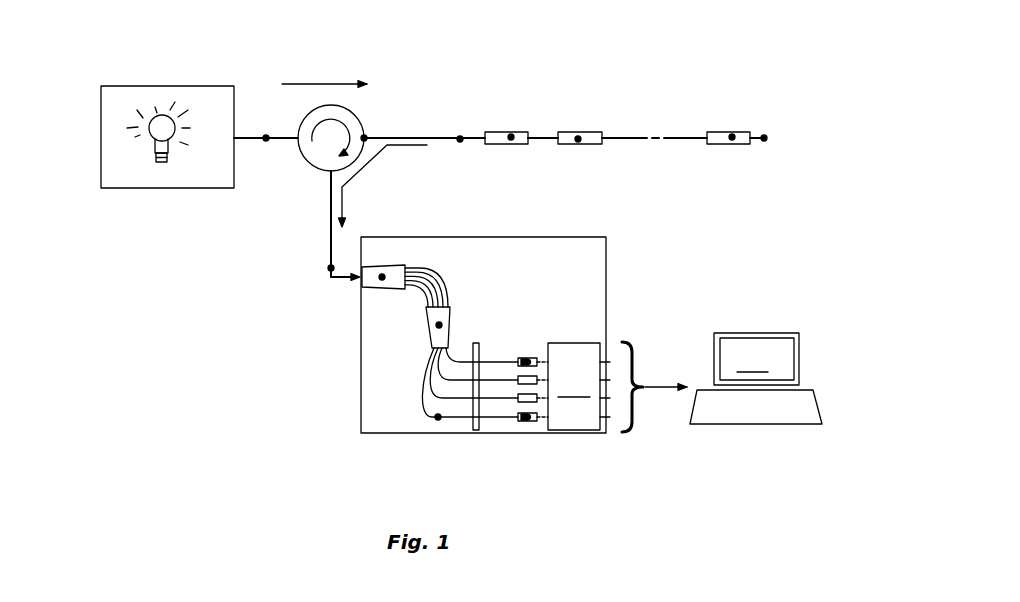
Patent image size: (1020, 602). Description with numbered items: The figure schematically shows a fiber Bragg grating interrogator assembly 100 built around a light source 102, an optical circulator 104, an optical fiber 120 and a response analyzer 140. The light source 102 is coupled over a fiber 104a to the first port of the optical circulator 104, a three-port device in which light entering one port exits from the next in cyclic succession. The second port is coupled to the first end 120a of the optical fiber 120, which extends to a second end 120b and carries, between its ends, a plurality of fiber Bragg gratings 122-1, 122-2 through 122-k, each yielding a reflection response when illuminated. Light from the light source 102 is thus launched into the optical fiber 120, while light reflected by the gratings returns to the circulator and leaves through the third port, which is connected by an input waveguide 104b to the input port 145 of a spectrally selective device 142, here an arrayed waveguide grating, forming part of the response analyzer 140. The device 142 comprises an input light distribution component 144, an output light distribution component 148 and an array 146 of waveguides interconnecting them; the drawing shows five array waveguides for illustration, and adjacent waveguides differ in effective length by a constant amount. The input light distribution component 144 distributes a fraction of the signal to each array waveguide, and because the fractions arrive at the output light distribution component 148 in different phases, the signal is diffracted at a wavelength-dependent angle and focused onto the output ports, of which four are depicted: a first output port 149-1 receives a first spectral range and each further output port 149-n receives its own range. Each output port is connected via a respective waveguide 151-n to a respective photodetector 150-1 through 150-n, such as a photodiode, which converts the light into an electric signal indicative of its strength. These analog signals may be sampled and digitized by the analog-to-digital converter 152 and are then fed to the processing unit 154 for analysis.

The fiber Bragg grating interrogator assembly 100 is at (178, 388).
The light source 102 is at (133, 158).
The optical circulator 104 is at (302, 170).
The optical fiber 104a is at (266, 138).
The input waveguide 104b is at (331, 268).
The optical fiber 120 is at (460, 139).
The first end of the optical fiber 120a is at (364, 138).
The second end of the optical fiber 120b is at (764, 138).
The fiber Bragg grating 122-1 is at (511, 137).
The fiber Bragg grating 122-2 is at (578, 139).
The fiber Bragg grating 122-k is at (732, 137).
The response analyzer 140 is at (660, 235).
The spectrally selective device (arrayed waveguide grating) 142 is at (387, 318).
The input light distribution component 144 is at (382, 277).
The input port 145 is at (356, 281).
The array of waveguides 146 is at (463, 269).
The output light distribution component 148 is at (439, 325).
The first output port 149-1 is at (453, 342).
The output port 149-n is at (427, 357).
The photodetector 150-1 is at (528, 362).
The photodetector 150-n is at (528, 417).
The waveguide 151-n is at (438, 417).
The analog-to-digital converter 152 is at (573, 386).
The processing unit 154 is at (756, 378).